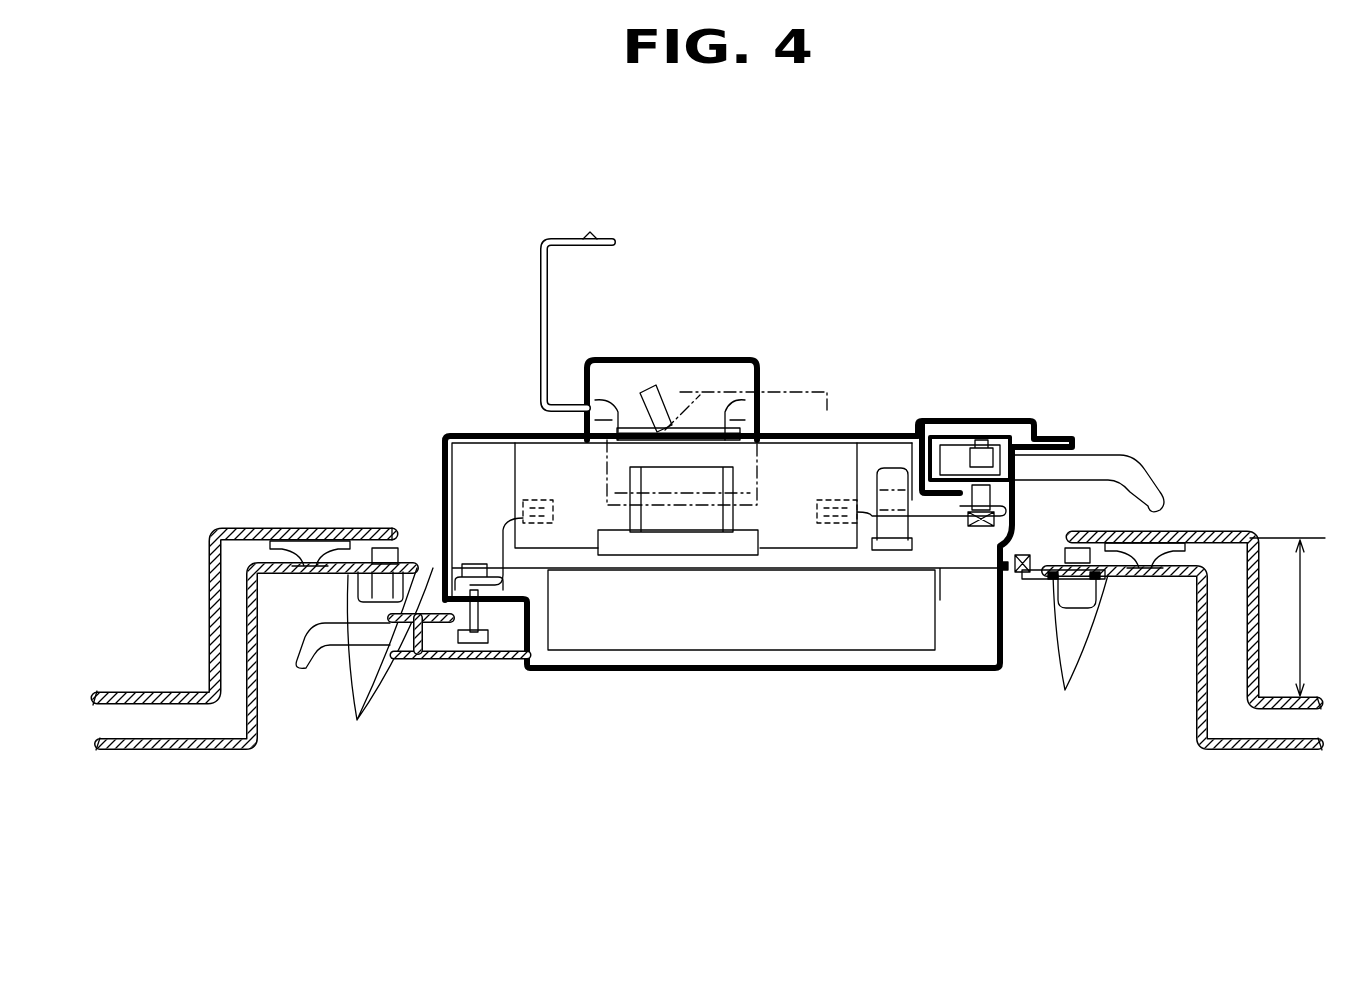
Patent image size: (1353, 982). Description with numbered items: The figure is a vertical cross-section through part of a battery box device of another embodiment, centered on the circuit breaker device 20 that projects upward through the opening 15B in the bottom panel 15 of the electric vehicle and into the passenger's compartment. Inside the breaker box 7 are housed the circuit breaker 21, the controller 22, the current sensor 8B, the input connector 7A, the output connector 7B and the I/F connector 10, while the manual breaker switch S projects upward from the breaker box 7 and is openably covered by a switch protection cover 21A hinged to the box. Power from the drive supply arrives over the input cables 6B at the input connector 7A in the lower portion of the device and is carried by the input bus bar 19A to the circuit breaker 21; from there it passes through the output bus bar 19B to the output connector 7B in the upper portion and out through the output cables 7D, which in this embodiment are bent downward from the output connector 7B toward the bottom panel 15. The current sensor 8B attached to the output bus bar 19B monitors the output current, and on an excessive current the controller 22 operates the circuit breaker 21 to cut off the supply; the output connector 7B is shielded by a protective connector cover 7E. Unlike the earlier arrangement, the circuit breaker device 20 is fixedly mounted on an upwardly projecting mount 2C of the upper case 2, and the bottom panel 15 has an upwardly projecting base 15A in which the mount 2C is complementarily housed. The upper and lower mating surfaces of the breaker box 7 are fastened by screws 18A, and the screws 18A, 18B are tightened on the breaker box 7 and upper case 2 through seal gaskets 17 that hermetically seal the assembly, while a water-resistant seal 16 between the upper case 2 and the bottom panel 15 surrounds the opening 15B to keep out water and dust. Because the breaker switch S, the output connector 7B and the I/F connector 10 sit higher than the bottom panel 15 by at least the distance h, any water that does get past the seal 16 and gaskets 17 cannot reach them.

The upper case 2 is at (185, 752).
The upwardly projecting mount 2C is at (257, 708).
The input cables 6B is at (418, 645).
The breaker box 7 is at (884, 672).
The input connector 7A is at (447, 662).
The output connector 7B is at (1040, 437).
The output cables 7D is at (1098, 458).
The protective connector cover 7E is at (980, 420).
The current sensor 8B is at (893, 466).
The I/F connector 10 is at (647, 477).
The bottom panel 15 is at (138, 691).
The upwardly projecting base 15A is at (206, 568).
The opening 15B is at (397, 527).
The water-resistant seal 16 is at (300, 530).
The seal gaskets 17 is at (1065, 690).
The screws 18A is at (1015, 554).
The screws 18B is at (1112, 576).
The input bus bar 19A is at (495, 540).
The output bus bar 19B is at (947, 515).
The circuit breaker device 20 is at (735, 196).
The circuit breaker 21 is at (505, 462).
The switch protection cover 21A is at (540, 258).
The controller 22 is at (668, 635).
The manual breaker switch S is at (640, 425).
The distance h is at (1287, 617).